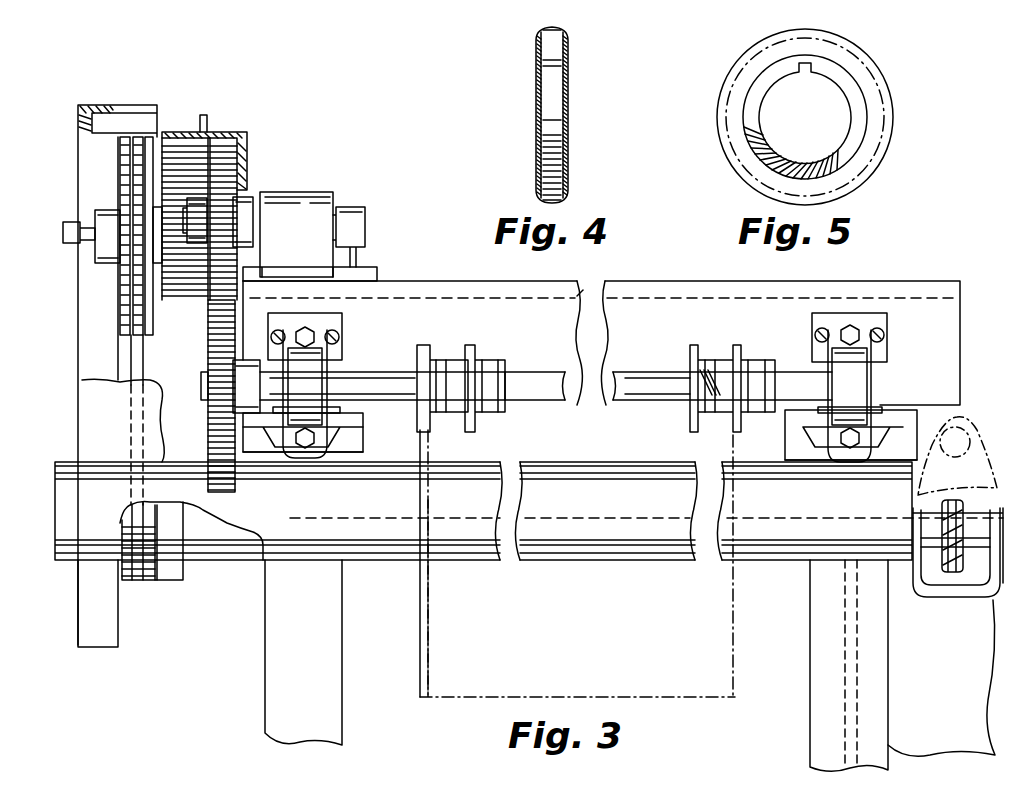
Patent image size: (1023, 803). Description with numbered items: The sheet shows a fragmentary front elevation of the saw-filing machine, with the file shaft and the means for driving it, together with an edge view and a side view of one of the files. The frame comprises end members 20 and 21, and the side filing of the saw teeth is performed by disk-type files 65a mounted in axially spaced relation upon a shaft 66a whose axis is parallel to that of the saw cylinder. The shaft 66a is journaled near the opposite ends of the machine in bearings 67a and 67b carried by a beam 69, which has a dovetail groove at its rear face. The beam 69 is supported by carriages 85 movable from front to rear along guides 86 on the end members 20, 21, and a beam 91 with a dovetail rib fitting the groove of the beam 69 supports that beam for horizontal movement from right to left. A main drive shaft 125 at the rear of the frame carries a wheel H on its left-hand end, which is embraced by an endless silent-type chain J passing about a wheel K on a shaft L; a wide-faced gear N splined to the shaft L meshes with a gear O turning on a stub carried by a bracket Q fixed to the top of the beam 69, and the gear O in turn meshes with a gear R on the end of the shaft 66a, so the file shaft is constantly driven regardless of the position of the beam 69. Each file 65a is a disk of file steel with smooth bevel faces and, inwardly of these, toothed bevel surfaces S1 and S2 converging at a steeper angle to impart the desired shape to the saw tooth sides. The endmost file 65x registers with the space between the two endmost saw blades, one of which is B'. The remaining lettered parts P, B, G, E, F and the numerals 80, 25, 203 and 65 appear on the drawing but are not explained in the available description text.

In FIG. 3, the endless silent-type chain J is at (130, 360).
In FIG. 3, the wheel K is at (150, 140).
In FIG. 3, the wide-faced gear N is at (186, 325).
In FIG. 3, the hub P is at (185, 215).
In FIG. 3, the shaft L is at (90, 250).
In FIG. 3, the gear O is at (222, 192).
In FIG. 3, the gear R is at (218, 446).
In FIG. 3, the bracket Q is at (325, 262).
In FIG. 3, the beam 69 is at (812, 292).
In FIG. 3, the beam 91 is at (585, 288).
In FIG. 3, the shaft 66a is at (376, 385).
In FIG. 3, the bearing 67a is at (315, 375).
In FIG. 3, the carriage 85 is at (940, 402).
In FIG. 3, the guide 86 is at (355, 458).
In FIG. 3, the endmost file 65x is at (425, 355).
In FIG. 3, the disk-type file 65a is at (692, 355).
In FIG. 4, the disk-type file 65a is at (576, 102).
In FIG. 3, the bearing 67b is at (850, 388).
In FIG. 3, the support bracket 80 is at (885, 452).
In FIG. 3, the end member 20 is at (278, 603).
In FIG. 3, the rail 25 is at (585, 532).
In FIG. 3, the end member 21 is at (815, 598).
In FIG. 3, the wheel H is at (128, 572).
In FIG. 3, the main drive shaft 125 is at (240, 543).
In FIG. 3, the section line B is at (550, 563).
In FIG. 3, the endmost saw blade B' is at (459, 598).
In FIG. 3, the guide G is at (957, 456).
In FIG. 3, the roller 203 is at (958, 442).
In FIG. 3, the bracket E is at (930, 598).
In FIG. 3, the roller F is at (955, 583).
In FIG. 4, the bevel surface S1 is at (530, 68).
In FIG. 4, the bevel surface S2 is at (573, 65).
In FIG. 5, the disc 65 is at (713, 84).